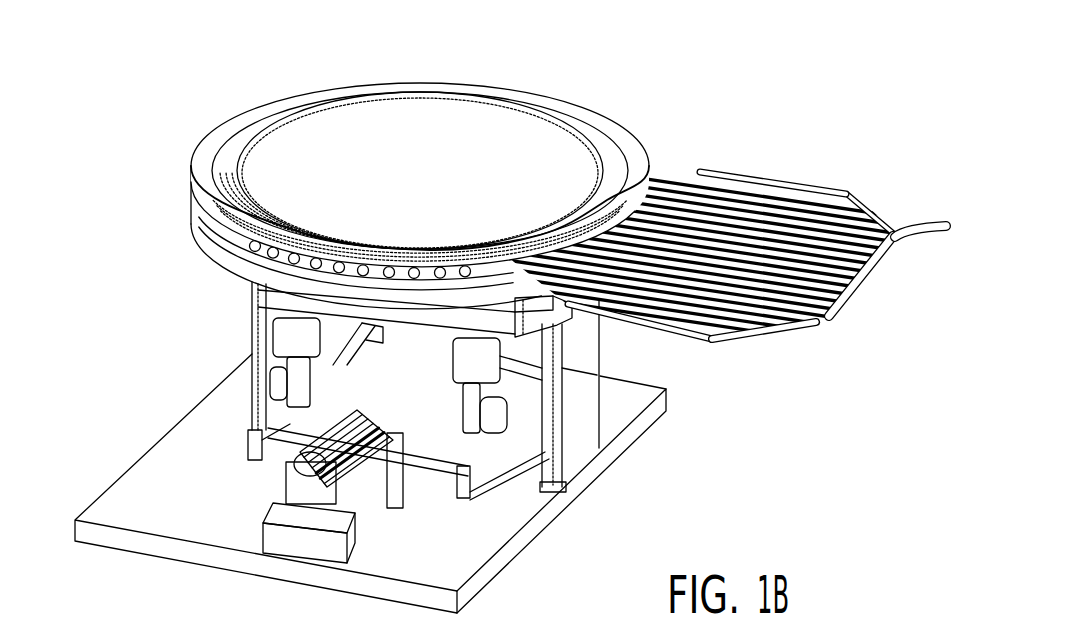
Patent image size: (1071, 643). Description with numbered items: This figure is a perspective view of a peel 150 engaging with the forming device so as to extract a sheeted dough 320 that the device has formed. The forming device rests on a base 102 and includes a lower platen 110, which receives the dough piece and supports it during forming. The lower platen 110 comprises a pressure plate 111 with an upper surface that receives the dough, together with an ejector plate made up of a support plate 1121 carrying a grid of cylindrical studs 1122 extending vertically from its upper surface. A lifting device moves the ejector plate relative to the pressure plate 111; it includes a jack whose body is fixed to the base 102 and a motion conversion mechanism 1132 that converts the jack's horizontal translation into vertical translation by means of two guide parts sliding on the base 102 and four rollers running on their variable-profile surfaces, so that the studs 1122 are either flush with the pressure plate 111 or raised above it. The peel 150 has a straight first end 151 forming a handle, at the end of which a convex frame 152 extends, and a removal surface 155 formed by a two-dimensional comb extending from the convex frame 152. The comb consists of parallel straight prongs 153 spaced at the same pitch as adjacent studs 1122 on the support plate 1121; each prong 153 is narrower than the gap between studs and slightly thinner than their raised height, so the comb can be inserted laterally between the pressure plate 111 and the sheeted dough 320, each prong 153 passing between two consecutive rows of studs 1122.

The base 102 is at (642, 425).
The lower platen 110 is at (511, 200).
The pressure plate 111 is at (193, 190).
The sheeted dough 320 is at (551, 130).
The support plate 1121 is at (200, 230).
The studs 1122 is at (255, 317).
The motion conversion mechanism 1132 is at (205, 443).
The peel 150 is at (698, 215).
The first end 151 is at (925, 243).
The convex frame 152 is at (874, 213).
The prongs 153 is at (723, 177).
The removal surface 155 is at (690, 204).